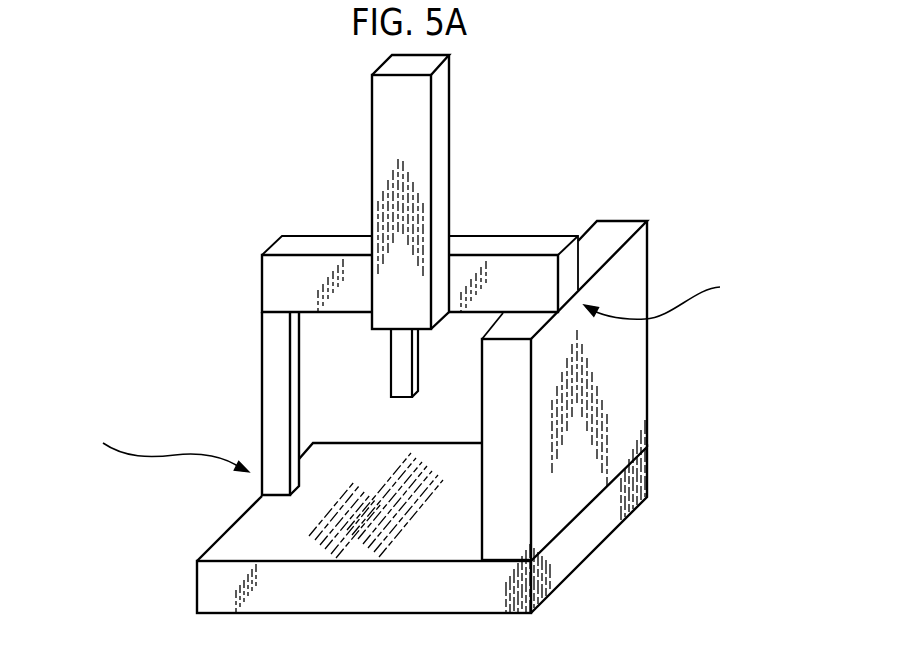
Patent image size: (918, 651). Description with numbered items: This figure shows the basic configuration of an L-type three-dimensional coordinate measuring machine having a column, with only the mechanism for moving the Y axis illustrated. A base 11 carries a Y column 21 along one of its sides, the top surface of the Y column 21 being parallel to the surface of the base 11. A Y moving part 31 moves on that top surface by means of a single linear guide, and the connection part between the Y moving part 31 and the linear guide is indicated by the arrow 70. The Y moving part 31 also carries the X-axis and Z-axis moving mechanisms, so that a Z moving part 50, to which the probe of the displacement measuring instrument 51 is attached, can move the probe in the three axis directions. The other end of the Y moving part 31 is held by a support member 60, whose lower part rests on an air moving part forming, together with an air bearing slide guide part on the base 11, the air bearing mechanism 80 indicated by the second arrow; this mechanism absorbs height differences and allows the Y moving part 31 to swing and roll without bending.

The base 11 is at (213, 587).
The Y column 21 is at (631, 405).
The Y moving part 31 is at (307, 240).
The Z moving part 50 is at (440, 128).
The probe of the displacement measuring instrument 51 is at (400, 382).
The support member 60 is at (268, 362).
The connection part 70 is at (673, 297).
The air bearing mechanism 80 is at (159, 443).